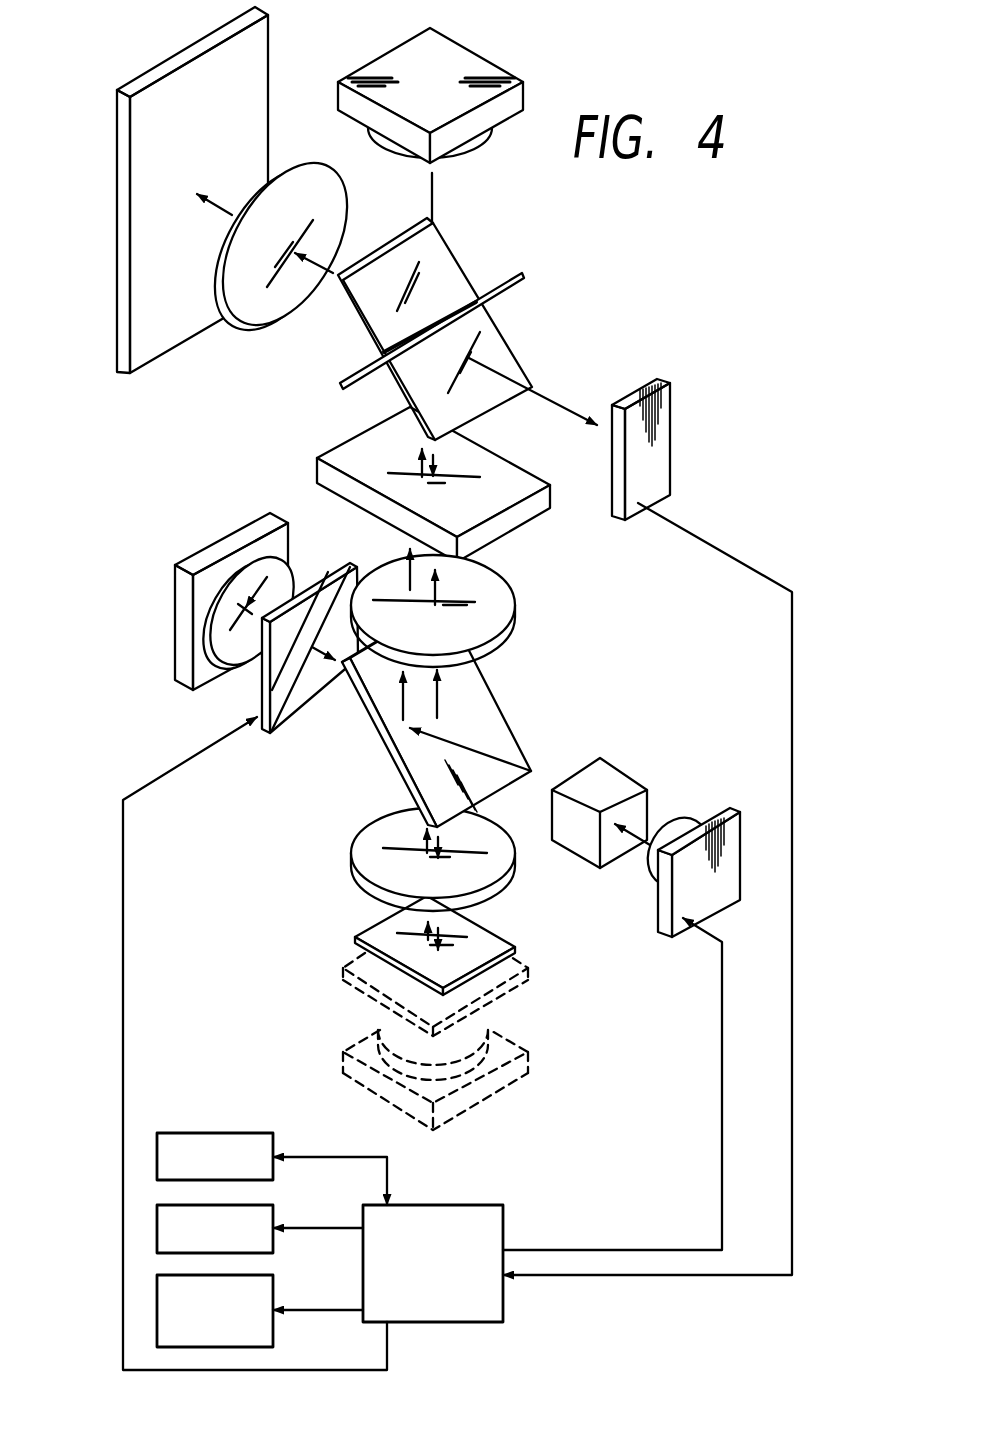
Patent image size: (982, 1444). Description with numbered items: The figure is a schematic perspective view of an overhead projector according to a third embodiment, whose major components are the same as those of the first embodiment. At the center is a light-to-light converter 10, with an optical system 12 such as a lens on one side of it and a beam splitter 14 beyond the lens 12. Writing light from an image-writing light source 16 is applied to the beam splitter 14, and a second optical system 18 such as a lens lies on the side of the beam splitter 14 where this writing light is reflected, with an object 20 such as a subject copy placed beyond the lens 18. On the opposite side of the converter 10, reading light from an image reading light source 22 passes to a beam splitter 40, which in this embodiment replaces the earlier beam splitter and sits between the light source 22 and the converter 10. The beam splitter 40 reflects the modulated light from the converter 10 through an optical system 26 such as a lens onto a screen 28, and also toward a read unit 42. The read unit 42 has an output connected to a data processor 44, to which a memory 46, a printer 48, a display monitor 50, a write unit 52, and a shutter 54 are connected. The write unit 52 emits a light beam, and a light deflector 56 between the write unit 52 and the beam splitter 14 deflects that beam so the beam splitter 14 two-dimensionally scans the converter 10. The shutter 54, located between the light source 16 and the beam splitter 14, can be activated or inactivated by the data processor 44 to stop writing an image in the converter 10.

The light-to-light converter 10 is at (507, 470).
The optical system 12 is at (492, 583).
The beam splitter 14 is at (490, 713).
The image-writing light source 16 is at (227, 545).
The optical system 18 is at (492, 883).
The object 20 is at (480, 932).
The image reading light source 22 is at (465, 58).
The optical system 26 is at (325, 190).
The screen 28 is at (257, 62).
The beam splitter 40 is at (452, 270).
The read unit 42 is at (635, 397).
The data processor 44 is at (503, 1228).
The memory 46 is at (273, 1140).
The printer 48 is at (273, 1213).
The display monitor 50 is at (273, 1297).
The write unit 52 is at (720, 812).
The shutter 54 is at (333, 582).
The light deflector 56 is at (610, 782).